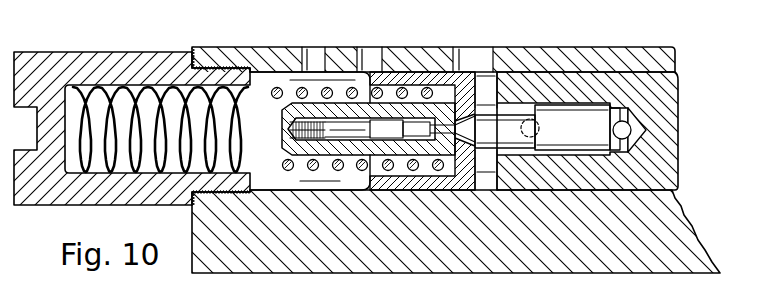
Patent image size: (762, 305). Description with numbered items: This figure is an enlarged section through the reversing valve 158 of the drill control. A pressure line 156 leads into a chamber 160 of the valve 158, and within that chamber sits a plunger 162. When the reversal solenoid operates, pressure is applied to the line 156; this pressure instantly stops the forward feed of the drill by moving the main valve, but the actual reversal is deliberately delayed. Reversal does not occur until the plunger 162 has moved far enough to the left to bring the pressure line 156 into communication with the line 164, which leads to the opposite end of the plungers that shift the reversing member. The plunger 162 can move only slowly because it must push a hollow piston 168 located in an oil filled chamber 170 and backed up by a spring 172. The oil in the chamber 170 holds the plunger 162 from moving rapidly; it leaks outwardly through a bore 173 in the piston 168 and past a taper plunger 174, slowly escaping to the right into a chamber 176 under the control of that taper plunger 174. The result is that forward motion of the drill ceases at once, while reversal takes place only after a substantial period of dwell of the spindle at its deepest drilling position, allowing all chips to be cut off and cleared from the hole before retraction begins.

The pressure line 156 is at (678, 118).
The valve 158 is at (508, 50).
The chamber 160 is at (678, 96).
The plunger 162 is at (553, 127).
The line 164 is at (526, 138).
The hollow piston 168 is at (418, 190).
The oil filled chamber 170 is at (321, 179).
The spring 172 is at (342, 171).
The bore 173 is at (348, 68).
The taper plunger 174 is at (424, 74).
The chamber 176 is at (484, 177).